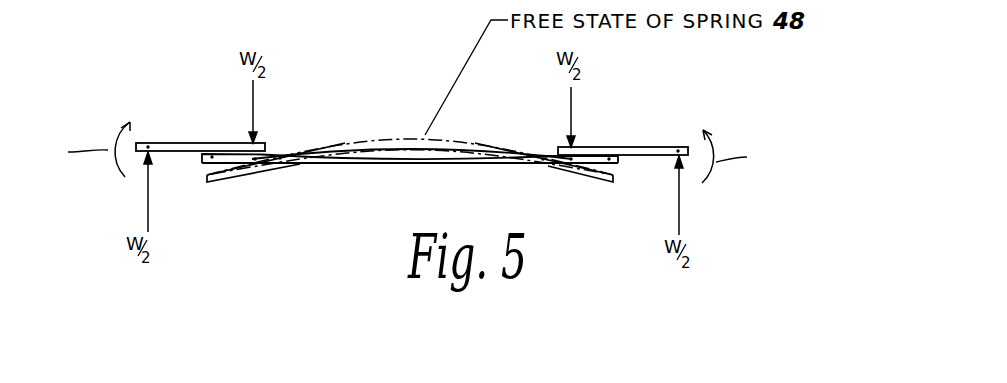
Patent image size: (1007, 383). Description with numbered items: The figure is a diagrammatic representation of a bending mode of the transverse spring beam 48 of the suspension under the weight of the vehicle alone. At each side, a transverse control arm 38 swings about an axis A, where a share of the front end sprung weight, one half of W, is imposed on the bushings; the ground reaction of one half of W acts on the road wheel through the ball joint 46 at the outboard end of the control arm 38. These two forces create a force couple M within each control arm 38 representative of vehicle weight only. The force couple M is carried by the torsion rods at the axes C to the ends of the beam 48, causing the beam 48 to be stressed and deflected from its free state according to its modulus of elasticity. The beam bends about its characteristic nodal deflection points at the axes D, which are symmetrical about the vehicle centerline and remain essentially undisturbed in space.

The transverse control arm 38 is at (170, 145).
The ball joint 46 is at (148, 146).
The transverse spring beam 48 is at (452, 161).
The swing axis of control arm A is at (255, 158).
The torsion rod axis C is at (209, 158).
The nodal deflection axis D is at (281, 157).
The force couple M is at (404, 152).